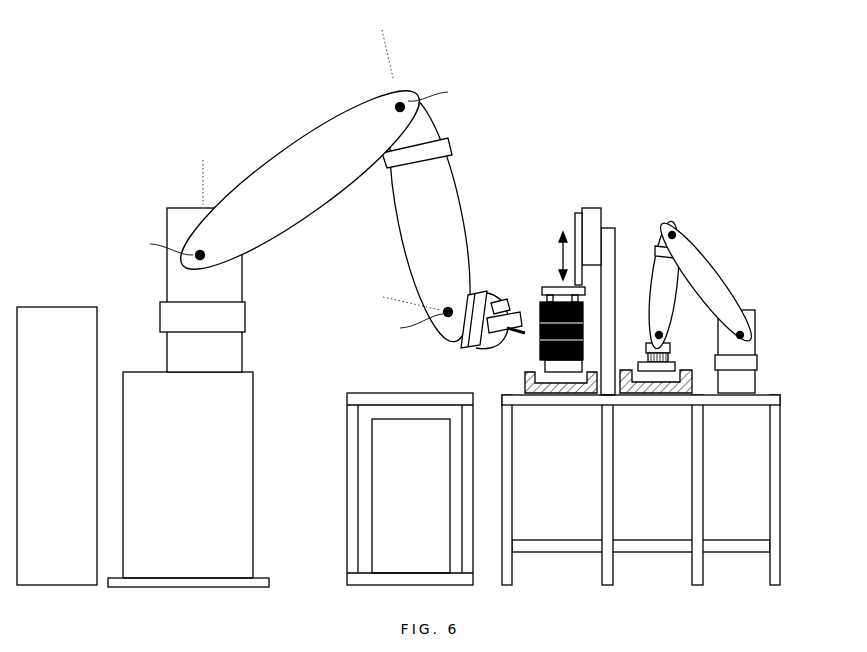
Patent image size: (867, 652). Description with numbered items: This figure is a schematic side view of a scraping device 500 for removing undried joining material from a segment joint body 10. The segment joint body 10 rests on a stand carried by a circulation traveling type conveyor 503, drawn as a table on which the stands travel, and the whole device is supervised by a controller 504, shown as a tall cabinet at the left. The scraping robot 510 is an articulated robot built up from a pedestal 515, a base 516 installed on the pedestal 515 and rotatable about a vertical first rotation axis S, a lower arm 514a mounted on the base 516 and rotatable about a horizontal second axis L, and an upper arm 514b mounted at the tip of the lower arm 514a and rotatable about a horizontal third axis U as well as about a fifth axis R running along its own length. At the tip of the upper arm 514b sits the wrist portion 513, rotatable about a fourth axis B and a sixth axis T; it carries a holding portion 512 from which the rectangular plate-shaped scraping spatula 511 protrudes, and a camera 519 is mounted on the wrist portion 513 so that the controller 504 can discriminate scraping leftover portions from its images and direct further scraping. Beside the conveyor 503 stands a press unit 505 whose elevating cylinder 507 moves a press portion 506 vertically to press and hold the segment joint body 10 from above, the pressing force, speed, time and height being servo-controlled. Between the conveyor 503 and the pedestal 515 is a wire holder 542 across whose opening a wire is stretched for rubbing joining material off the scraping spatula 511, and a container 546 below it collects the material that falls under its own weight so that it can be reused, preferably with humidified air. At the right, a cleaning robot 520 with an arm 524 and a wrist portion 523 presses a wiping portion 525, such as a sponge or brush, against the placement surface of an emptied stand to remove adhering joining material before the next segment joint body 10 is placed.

The scraping device 500 is at (527, 82).
The controller 504 is at (55, 307).
The scraping robot 510 is at (343, 100).
The lower arm 514a is at (293, 140).
The upper arm 514b is at (455, 180).
The base 516 is at (243, 287).
The pedestal 515 is at (253, 490).
The wrist portion 513 is at (475, 350).
The holding portion 512 is at (500, 344).
The scraping spatula 511 is at (523, 320).
The camera 519 is at (503, 297).
The wire holder 542 is at (380, 393).
The container 546 is at (372, 445).
The circulation traveling type conveyor 503 is at (637, 398).
The press unit 505 is at (558, 269).
The elevating cylinder 507 is at (575, 220).
The press portion 506 is at (552, 286).
The segment joint body 10 is at (585, 315).
The cleaning robot 520 is at (738, 272).
The wrist portion 523 is at (683, 342).
The arm 524 is at (690, 248).
The wiping portion 525 is at (673, 351).